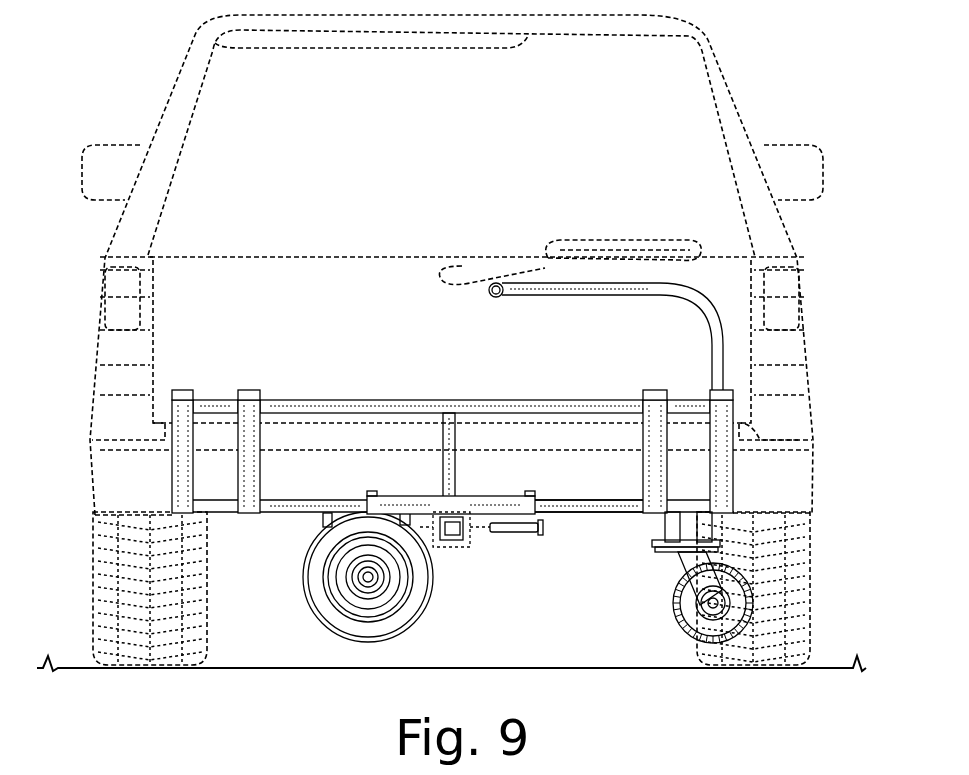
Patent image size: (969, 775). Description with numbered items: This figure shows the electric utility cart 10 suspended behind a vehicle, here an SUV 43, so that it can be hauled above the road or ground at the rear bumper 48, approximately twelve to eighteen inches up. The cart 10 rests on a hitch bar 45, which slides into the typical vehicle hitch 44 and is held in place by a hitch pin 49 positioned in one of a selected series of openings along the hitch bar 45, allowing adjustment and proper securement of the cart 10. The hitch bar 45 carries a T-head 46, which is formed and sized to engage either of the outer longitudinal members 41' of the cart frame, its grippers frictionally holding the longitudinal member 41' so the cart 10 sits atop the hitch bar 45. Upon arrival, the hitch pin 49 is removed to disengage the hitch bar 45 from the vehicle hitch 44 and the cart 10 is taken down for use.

The SUV 43 is at (723, 50).
The rear bumper 48 is at (797, 473).
The utility cart 10 is at (368, 378).
The T-head 46 is at (410, 504).
The outer longitudinal member 41' is at (589, 531).
The hitch bar 45 is at (452, 541).
The vehicle hitch 44 is at (460, 547).
The hitch pin 49 is at (510, 534).